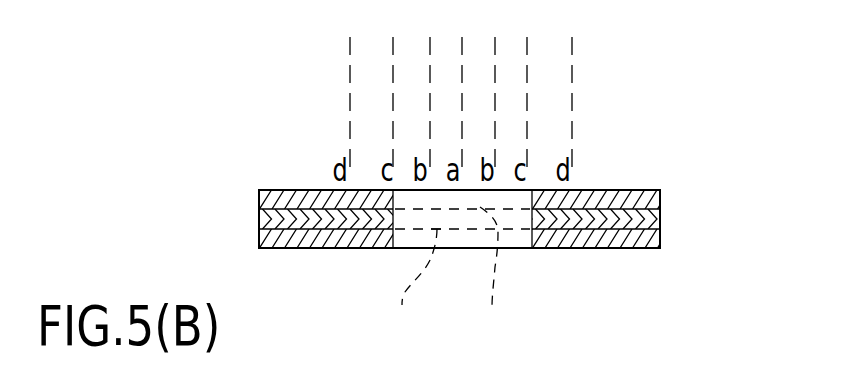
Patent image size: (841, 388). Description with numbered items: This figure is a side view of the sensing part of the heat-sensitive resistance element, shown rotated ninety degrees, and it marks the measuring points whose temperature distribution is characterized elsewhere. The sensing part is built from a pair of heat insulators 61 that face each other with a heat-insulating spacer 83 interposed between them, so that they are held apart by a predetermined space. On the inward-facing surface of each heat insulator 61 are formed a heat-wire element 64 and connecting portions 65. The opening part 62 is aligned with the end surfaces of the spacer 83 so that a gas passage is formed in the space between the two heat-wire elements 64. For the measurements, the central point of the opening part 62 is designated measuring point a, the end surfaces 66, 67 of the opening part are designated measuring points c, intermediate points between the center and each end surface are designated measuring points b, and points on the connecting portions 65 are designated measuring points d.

The heat insulator 61 is at (646, 190).
The opening part 62 is at (472, 248).
The heat-wire element 64 is at (455, 277).
The connecting portion 65 is at (328, 208).
The end surface of the opening part 66 is at (393, 248).
The end surface of the opening part 67 is at (533, 248).
The spacer 83 is at (635, 217).